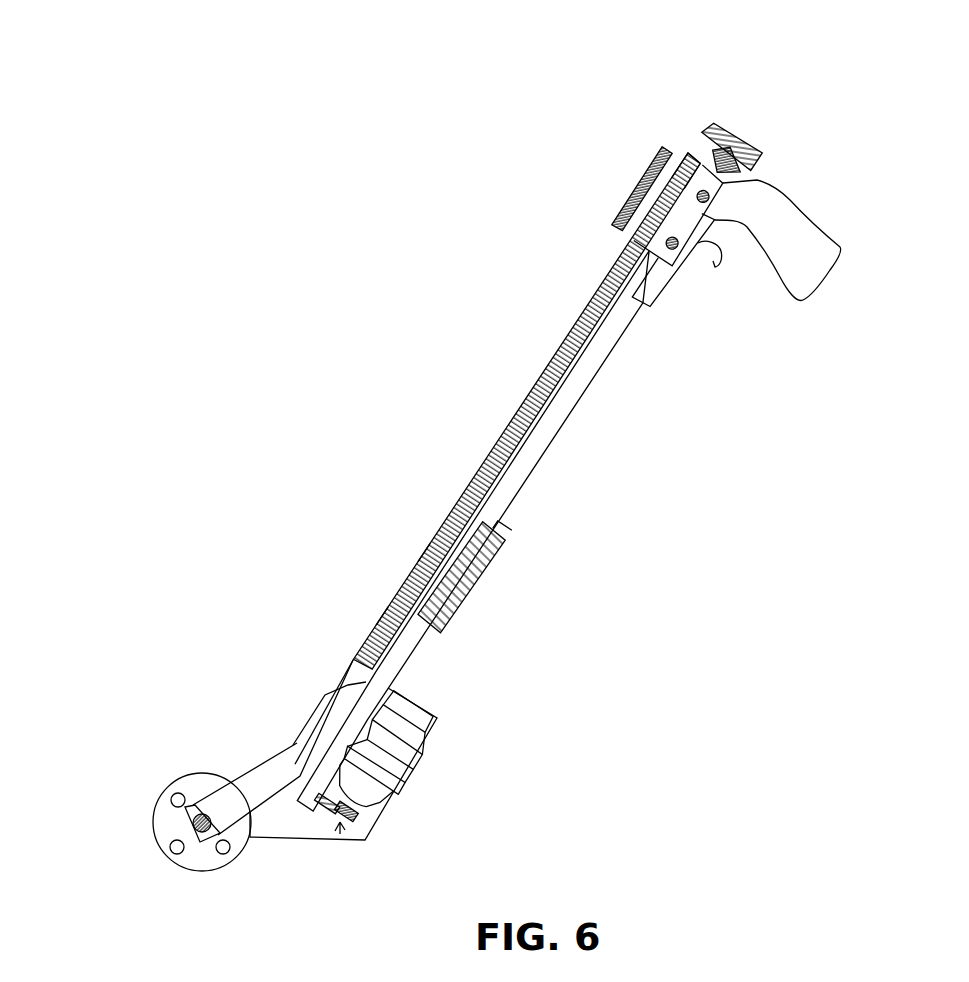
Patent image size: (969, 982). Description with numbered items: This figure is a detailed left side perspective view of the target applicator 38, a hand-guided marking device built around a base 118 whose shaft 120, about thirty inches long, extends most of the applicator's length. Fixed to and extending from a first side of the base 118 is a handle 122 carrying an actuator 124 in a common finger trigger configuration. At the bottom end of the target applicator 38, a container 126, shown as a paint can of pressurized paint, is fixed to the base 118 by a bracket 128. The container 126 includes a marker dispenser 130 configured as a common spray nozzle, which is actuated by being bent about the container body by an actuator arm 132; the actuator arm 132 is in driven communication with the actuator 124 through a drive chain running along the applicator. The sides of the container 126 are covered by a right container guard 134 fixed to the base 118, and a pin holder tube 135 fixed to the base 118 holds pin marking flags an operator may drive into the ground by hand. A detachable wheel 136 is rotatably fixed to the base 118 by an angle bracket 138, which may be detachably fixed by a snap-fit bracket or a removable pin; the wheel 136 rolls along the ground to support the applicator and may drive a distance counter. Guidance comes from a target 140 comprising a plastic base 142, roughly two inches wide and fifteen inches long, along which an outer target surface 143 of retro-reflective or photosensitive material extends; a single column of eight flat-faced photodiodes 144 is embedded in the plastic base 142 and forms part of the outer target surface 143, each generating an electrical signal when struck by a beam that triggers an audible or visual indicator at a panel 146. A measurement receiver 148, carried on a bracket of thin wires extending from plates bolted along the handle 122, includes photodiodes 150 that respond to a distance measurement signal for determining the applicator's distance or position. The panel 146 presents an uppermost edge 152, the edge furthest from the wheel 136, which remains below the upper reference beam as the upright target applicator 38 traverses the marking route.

The target applicator 38 is at (290, 298).
The base 118 is at (656, 477).
The shaft 120 is at (597, 380).
The handle 122 is at (793, 252).
The actuator 124 is at (707, 257).
The container 126 is at (422, 704).
The bracket 128 is at (415, 740).
The marker dispenser 130 is at (345, 818).
The actuator arm 132 is at (321, 797).
The right container guard 134 is at (272, 827).
The pin holder tube 135 is at (468, 567).
The detachable wheel 136 is at (165, 815).
The angle bracket 138 is at (272, 770).
The target 140 is at (572, 318).
The plastic base 142 is at (382, 615).
The outer target surface 143 is at (425, 553).
The photodiodes 144 is at (620, 268).
The panel 146 is at (723, 124).
The measurement receiver 148 is at (655, 147).
The photodiodes 150 is at (655, 154).
The uppermost edge 152 is at (718, 128).